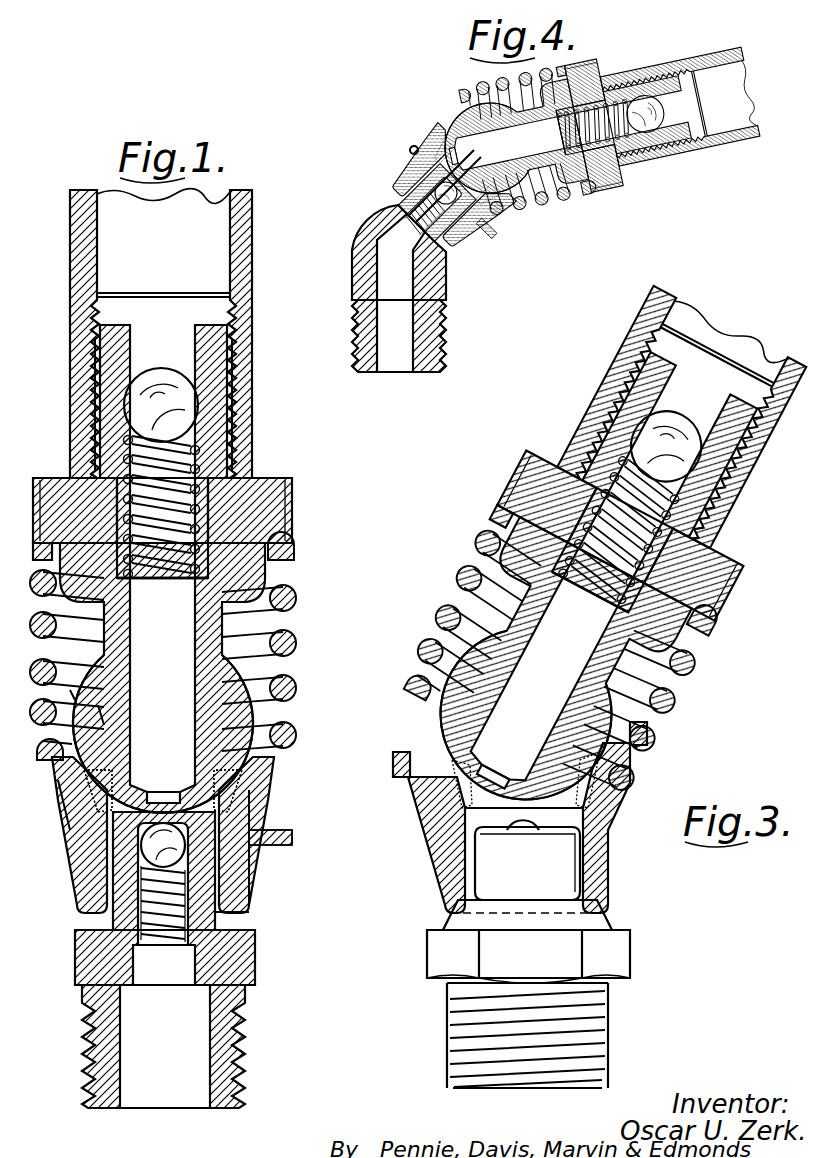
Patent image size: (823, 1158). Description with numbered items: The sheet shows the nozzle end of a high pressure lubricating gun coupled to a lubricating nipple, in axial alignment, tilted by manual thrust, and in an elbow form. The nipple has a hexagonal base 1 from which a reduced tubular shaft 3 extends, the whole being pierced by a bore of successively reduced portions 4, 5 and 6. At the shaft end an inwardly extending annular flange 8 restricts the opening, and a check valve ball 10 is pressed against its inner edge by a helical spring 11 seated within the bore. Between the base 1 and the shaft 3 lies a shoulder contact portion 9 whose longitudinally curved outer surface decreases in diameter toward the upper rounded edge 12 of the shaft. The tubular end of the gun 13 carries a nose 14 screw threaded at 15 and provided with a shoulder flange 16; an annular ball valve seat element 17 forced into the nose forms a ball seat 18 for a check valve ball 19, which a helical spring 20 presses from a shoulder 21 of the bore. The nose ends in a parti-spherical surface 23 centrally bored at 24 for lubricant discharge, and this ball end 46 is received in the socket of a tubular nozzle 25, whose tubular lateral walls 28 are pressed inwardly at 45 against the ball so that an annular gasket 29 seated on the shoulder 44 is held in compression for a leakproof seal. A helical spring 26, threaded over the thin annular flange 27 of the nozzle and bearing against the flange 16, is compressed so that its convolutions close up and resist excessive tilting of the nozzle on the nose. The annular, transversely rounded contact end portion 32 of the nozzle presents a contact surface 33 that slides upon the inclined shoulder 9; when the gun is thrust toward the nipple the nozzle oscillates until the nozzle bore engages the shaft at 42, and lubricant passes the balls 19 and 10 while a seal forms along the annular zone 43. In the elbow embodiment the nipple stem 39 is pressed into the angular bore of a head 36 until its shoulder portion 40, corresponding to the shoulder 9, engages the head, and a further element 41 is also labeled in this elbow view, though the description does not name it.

In FIG. 1, the base 1 is at (258, 970).
In FIG. 1, the tubular shaft 3 is at (122, 862).
In FIG. 1, the bore portion 4 is at (183, 1058).
In FIG. 1, the bore portion 5 is at (175, 965).
In FIG. 1, the bore portion 6 is at (190, 881).
In FIG. 4, the bore portion 6 is at (425, 214).
In FIG. 1, the annular flange 8 is at (120, 823).
In FIG. 1, the shoulder contact portion 9 is at (265, 936).
In FIG. 1, the check valve ball 10 is at (186, 846).
In FIG. 3, the check valve ball 10 is at (523, 826).
In FIG. 4, the check valve ball 10 is at (445, 192).
In FIG. 1, the helical spring 11 is at (246, 901).
In FIG. 1, the rounded edge 12 is at (270, 833).
In FIG. 1, the tubular end of the gun 13 is at (245, 252).
In FIG. 3, the tubular end of the gun 13 is at (682, 416).
In FIG. 4, the tubular end of the gun 13 is at (700, 147).
In FIG. 1, the nose 14 is at (270, 566).
In FIG. 3, the nose 14 is at (655, 600).
In FIG. 4, the nose 14 is at (578, 184).
In FIG. 1, the screw threads 15 is at (240, 398).
In FIG. 1, the shoulder flange 16 is at (280, 494).
In FIG. 3, the shoulder flange 16 is at (617, 543).
In FIG. 4, the shoulder flange 16 is at (589, 126).
In FIG. 1, the ball valve seat element 17 is at (222, 338).
In FIG. 3, the ball valve seat element 17 is at (647, 486).
In FIG. 4, the ball valve seat element 17 is at (622, 120).
In FIG. 1, the ball seat 18 is at (96, 408).
In FIG. 1, the check valve ball 19 is at (180, 398).
In FIG. 3, the check valve ball 19 is at (672, 447).
In FIG. 4, the check valve ball 19 is at (645, 114).
In FIG. 1, the helical spring 20 is at (205, 451).
In FIG. 3, the helical spring 20 is at (621, 532).
In FIG. 4, the helical spring 20 is at (596, 125).
In FIG. 1, the shoulder 21 is at (205, 581).
In FIG. 1, the parti-spherical surface 23 is at (240, 740).
In FIG. 3, the parti-spherical surface 23 is at (520, 723).
In FIG. 4, the parti-spherical surface 23 is at (485, 149).
In FIG. 1, the lubricant discharge opening 24 is at (163, 792).
In FIG. 1, the tubular nozzle 25 is at (255, 836).
In FIG. 3, the tubular nozzle 25 is at (598, 866).
In FIG. 4, the tubular nozzle 25 is at (430, 182).
In FIG. 1, the helical spring 26 is at (42, 614).
In FIG. 3, the helical spring 26 is at (668, 668).
In FIG. 4, the helical spring 26 is at (527, 140).
In FIG. 1, the annular flange 27 is at (290, 756).
In FIG. 1, the tubular lateral walls 28 is at (60, 792).
In FIG. 1, the annular gasket 29 is at (250, 802).
In FIG. 1, the contact end portion 32 is at (250, 916).
In FIG. 1, the nozzle contact surface 33 is at (125, 930).
In FIG. 4, the head 36 is at (365, 222).
In FIG. 4, the stem 39 is at (447, 262).
In FIG. 4, the shoulder portion 40 is at (410, 210).
In FIG. 4, the socket member 41 is at (474, 226).
In FIG. 3, the engagement 42 is at (548, 808).
In FIG. 3, the annular zone of contact 43 is at (478, 915).
In FIG. 1, the shoulder 44 is at (96, 812).
In FIG. 1, the inturned end portions 45 is at (72, 691).
In FIG. 1, the ball end 46 is at (104, 714).